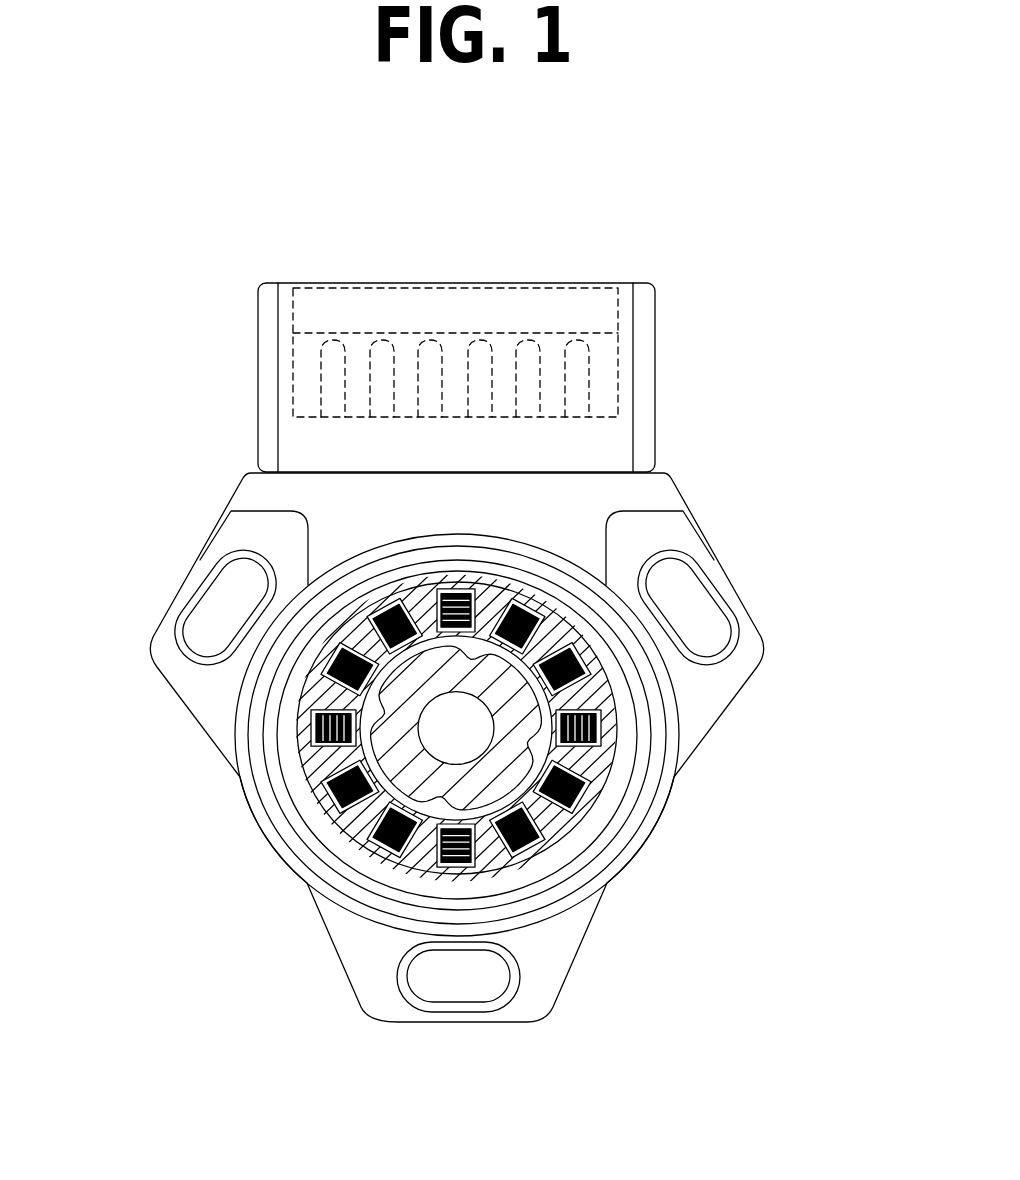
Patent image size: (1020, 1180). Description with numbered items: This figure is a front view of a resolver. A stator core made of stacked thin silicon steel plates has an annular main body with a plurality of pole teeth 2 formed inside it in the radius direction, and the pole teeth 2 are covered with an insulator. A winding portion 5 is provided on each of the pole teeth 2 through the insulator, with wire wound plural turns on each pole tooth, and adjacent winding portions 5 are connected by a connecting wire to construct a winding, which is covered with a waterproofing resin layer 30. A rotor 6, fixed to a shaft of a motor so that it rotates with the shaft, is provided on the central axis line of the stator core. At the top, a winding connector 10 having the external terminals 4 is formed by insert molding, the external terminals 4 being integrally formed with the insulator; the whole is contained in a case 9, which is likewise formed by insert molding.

The pole teeth 2 is at (512, 804).
The external terminals 4 is at (485, 336).
The winding portion 5 is at (523, 603).
The rotor 6 is at (527, 730).
The case 9 is at (295, 500).
The winding connector 10 is at (640, 364).
The waterproofing resin layer 30 is at (575, 698).